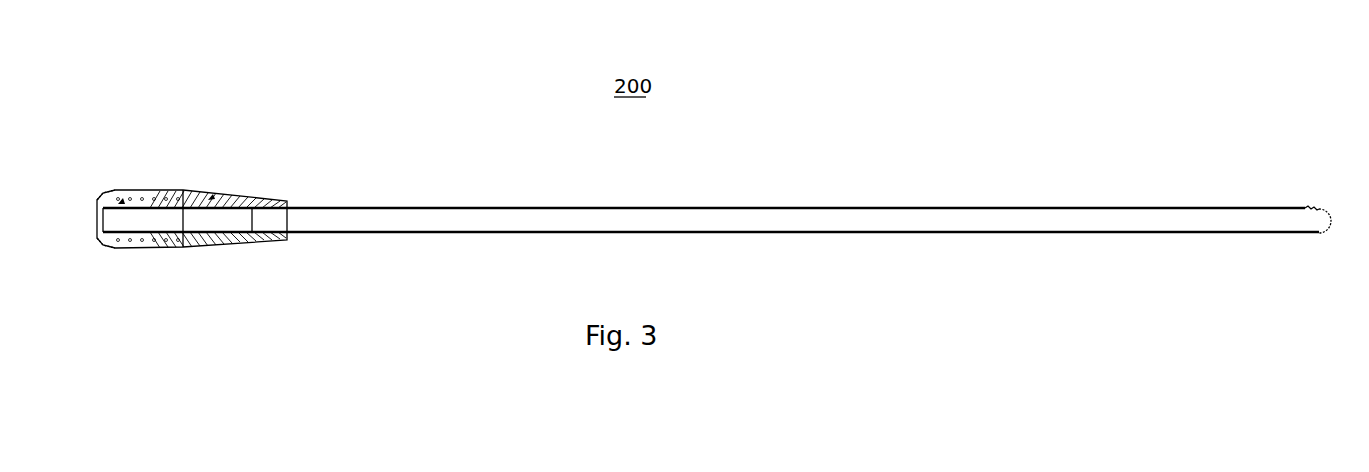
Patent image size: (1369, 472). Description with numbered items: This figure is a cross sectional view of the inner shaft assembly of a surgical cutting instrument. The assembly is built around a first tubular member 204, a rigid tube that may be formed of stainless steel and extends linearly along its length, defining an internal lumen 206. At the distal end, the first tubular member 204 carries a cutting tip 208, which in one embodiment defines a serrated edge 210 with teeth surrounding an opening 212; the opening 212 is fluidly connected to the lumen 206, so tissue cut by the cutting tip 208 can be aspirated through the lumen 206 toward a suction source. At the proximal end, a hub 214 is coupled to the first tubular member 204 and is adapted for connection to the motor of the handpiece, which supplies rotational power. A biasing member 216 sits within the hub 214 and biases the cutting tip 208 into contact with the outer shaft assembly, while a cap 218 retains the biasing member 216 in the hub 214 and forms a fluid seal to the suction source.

The first tubular member 204 is at (815, 235).
The lumen 206 is at (887, 220).
The cutting tip 208 is at (1306, 207).
The serrated edge 210 is at (1319, 214).
The opening 212 is at (1311, 214).
The hub 214 is at (235, 249).
The biasing member 216 is at (158, 243).
The cap 218 is at (112, 246).